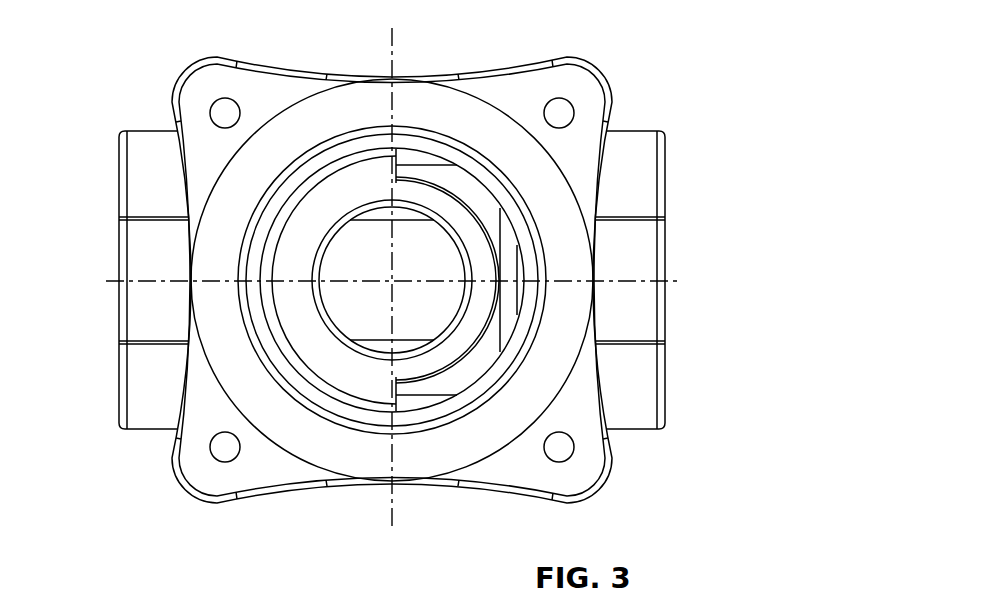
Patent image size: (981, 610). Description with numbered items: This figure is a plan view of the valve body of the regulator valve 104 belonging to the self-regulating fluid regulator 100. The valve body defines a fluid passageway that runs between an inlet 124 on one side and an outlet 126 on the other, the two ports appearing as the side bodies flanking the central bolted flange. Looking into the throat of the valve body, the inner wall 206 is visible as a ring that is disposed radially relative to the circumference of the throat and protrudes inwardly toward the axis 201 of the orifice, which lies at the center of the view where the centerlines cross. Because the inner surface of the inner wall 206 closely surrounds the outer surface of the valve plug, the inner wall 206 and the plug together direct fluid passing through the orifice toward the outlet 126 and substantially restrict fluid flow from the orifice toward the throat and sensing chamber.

The self-regulating fluid regulator 100 is at (748, 45).
The regulator valve 104 is at (698, 117).
The inlet 124 is at (118, 262).
The outlet 126 is at (665, 256).
The inner wall 206 is at (274, 226).
The axis 201 is at (393, 283).